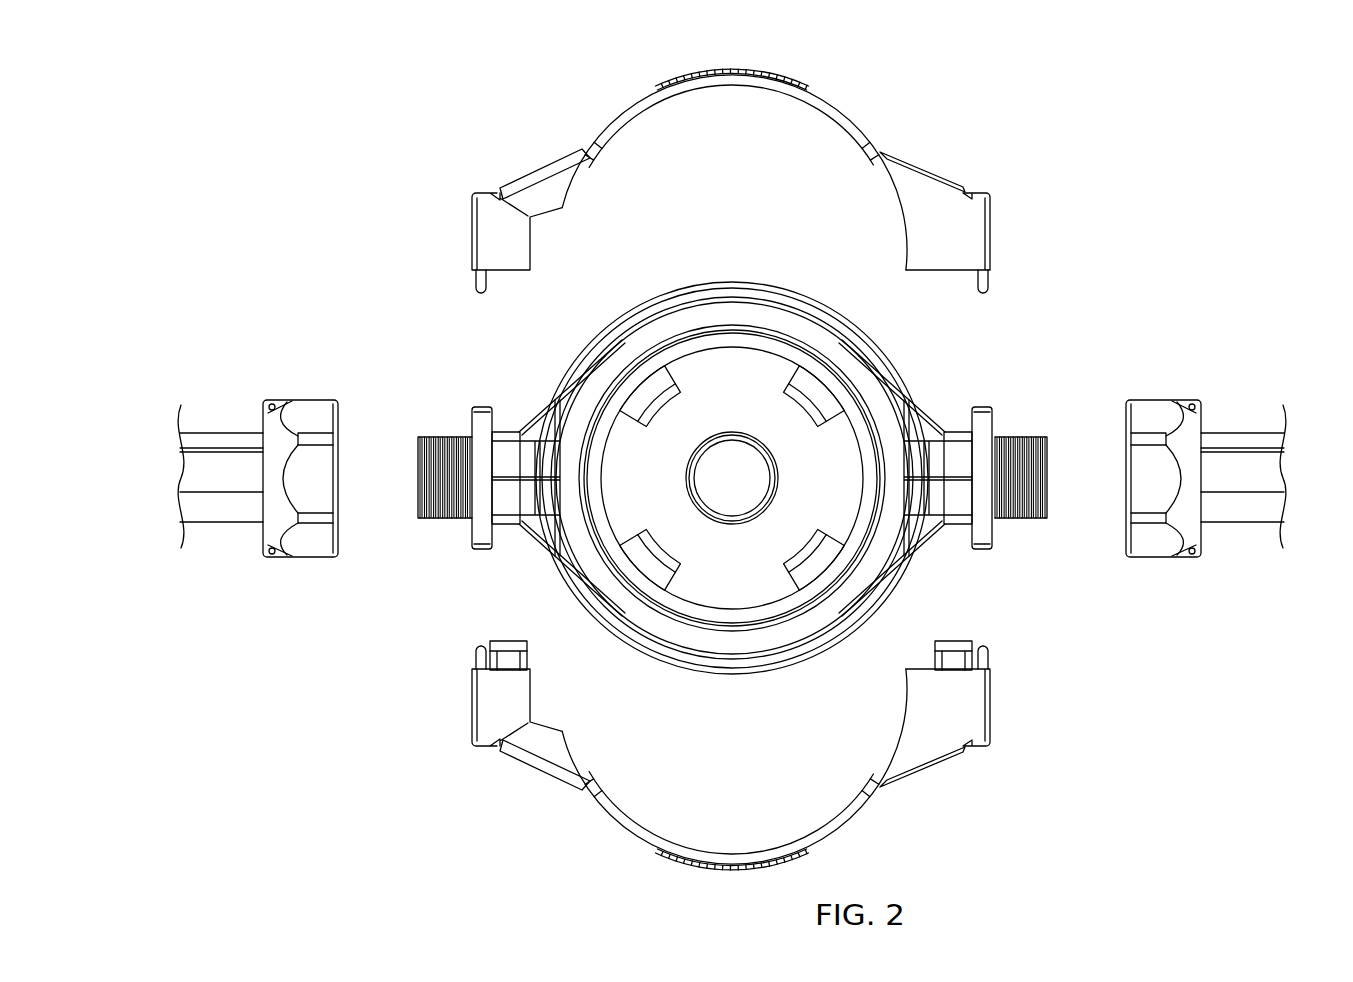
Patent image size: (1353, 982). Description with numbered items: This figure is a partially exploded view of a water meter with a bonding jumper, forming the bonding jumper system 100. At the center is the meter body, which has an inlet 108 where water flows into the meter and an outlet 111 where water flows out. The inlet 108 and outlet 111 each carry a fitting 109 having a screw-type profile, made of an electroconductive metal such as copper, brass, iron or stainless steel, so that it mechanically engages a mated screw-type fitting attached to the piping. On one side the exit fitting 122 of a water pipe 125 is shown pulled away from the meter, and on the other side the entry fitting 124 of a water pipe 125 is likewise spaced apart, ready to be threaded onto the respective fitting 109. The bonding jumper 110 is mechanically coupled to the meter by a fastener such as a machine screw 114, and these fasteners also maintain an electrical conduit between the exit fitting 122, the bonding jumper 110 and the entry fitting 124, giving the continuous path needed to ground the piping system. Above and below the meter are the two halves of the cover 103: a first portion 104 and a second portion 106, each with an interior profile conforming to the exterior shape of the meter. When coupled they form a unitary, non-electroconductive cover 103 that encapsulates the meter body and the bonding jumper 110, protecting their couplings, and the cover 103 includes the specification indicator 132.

The bonding jumper system 100 is at (280, 79).
The cover 103 is at (776, 184).
The first portion 104 is at (958, 726).
The second portion 106 is at (955, 216).
The inlet 108 is at (415, 512).
The fitting 109 is at (1003, 425).
The bonding jumper 110 is at (548, 400).
The outlet 111 is at (1047, 500).
The machine screw 114 is at (985, 405).
The exit fitting 122 is at (313, 404).
The entry fitting 124 is at (1157, 405).
The water pipe 125 is at (200, 514).
The specification indicator 132 is at (786, 63).